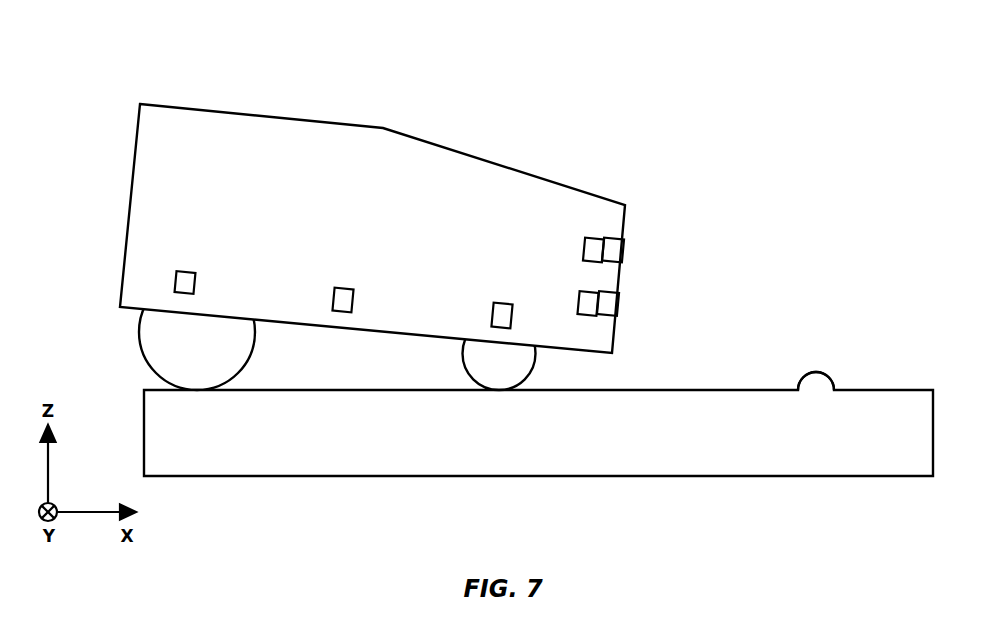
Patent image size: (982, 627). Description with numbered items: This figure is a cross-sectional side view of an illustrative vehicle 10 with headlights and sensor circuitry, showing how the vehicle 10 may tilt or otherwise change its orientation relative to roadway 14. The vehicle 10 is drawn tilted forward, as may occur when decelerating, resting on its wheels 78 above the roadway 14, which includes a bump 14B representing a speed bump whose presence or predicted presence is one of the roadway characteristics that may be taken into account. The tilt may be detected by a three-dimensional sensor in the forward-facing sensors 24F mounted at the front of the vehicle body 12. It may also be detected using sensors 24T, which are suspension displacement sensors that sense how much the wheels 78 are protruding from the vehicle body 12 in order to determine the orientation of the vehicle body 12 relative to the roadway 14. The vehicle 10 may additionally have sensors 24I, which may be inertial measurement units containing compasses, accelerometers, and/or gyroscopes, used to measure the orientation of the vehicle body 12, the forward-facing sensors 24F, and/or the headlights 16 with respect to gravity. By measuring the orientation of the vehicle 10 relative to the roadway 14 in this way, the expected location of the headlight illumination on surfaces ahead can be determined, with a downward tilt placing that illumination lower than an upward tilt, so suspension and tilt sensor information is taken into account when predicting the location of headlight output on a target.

The vehicle 10 is at (476, 61).
The vehicle body 12 is at (130, 202).
The roadway 14 is at (895, 389).
The bump 14B is at (815, 383).
The headlights 16 is at (608, 305).
The sensors 24T is at (190, 283).
The sensors 24I is at (346, 300).
The forward-facing sensors 24F is at (612, 251).
The wheels 78 is at (238, 350).